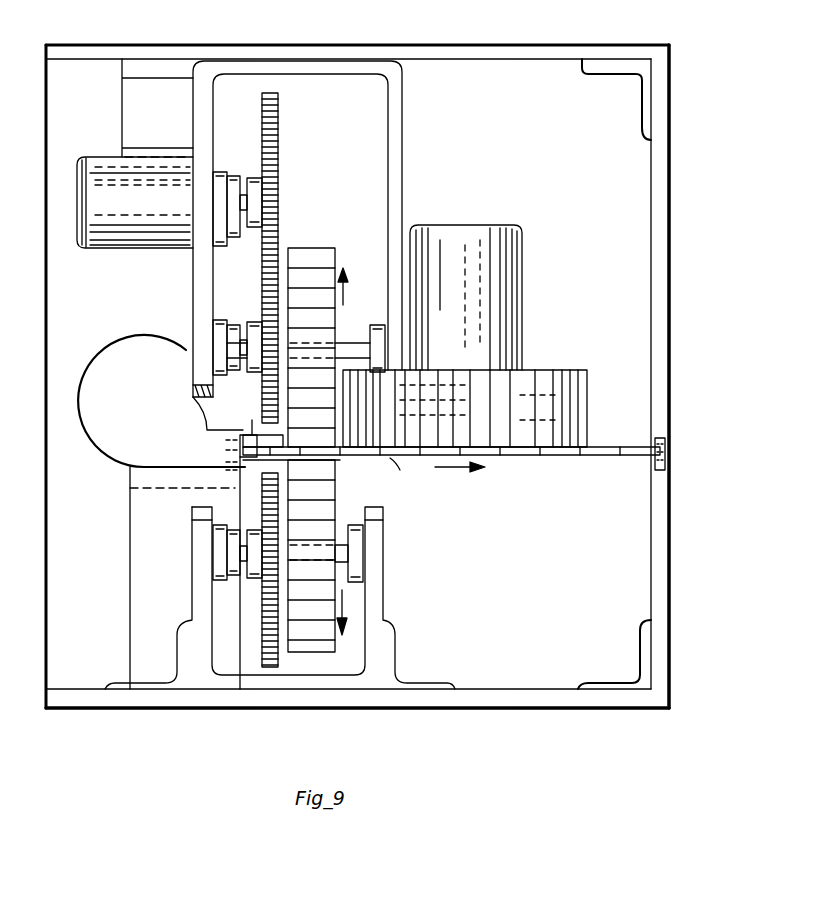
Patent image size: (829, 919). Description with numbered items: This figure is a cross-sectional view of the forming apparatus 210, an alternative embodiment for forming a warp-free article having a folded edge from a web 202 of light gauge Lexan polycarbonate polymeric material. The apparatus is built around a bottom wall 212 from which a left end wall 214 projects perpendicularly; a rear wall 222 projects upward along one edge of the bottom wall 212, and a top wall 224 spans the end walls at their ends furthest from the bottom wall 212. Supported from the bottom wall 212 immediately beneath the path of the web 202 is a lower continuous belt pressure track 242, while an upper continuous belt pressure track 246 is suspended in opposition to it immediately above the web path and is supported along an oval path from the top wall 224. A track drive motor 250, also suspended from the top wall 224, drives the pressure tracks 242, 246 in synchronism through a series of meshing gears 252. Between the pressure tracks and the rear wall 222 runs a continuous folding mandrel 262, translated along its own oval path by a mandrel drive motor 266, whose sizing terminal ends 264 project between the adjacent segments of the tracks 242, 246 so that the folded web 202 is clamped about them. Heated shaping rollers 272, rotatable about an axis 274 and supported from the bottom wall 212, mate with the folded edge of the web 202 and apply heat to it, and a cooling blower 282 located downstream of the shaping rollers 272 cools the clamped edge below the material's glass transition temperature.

The web 202 is at (390, 457).
The forming apparatus 210 is at (722, 470).
The bottom wall 212 is at (469, 708).
The left end wall 214 is at (521, 586).
The rear wall 222 is at (667, 592).
The top wall 224 is at (400, 45).
The lower continuous belt pressure track 242 is at (313, 654).
The upper continuous belt pressure track 246 is at (305, 256).
The track drive motor 250 is at (160, 243).
The meshing gears 252 is at (279, 155).
The continuous folding mandrel 262 is at (588, 372).
The sizing terminal ends 264 is at (340, 457).
The mandrel drive motor 266 is at (474, 228).
The heated shaping rollers 272 is at (207, 430).
The axis 274 is at (252, 428).
The cooling blower 282 is at (128, 330).